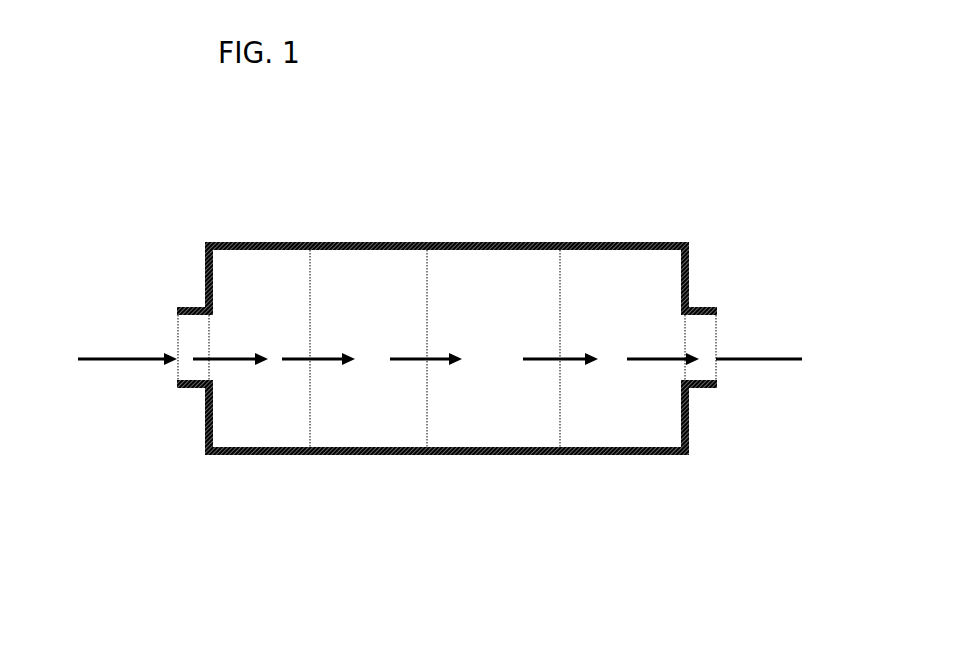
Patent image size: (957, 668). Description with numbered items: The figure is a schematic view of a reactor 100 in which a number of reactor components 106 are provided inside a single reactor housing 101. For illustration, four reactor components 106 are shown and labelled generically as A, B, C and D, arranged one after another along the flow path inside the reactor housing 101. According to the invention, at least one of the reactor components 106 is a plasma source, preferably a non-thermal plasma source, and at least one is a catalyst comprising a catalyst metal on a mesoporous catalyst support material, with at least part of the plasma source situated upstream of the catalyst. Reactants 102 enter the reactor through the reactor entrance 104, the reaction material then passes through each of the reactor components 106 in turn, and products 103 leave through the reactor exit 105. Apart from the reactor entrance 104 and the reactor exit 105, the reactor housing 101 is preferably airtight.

The reactor 100 is at (580, 154).
The reactor housing 101 is at (407, 232).
The reactants 102 is at (98, 368).
The products 103 is at (797, 370).
The reactor entrance 104 is at (193, 325).
The reactor exit 105 is at (700, 324).
The reactor components 106 is at (604, 422).